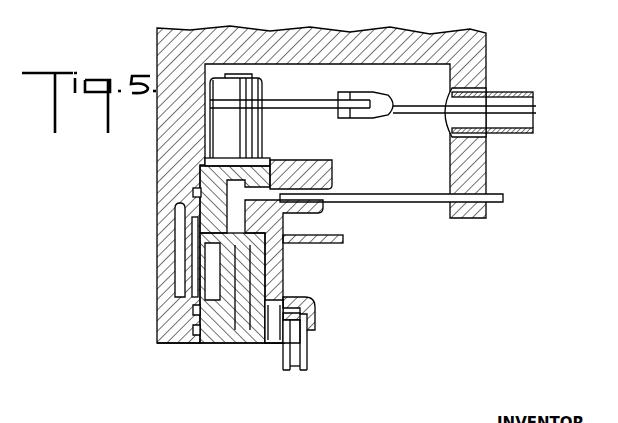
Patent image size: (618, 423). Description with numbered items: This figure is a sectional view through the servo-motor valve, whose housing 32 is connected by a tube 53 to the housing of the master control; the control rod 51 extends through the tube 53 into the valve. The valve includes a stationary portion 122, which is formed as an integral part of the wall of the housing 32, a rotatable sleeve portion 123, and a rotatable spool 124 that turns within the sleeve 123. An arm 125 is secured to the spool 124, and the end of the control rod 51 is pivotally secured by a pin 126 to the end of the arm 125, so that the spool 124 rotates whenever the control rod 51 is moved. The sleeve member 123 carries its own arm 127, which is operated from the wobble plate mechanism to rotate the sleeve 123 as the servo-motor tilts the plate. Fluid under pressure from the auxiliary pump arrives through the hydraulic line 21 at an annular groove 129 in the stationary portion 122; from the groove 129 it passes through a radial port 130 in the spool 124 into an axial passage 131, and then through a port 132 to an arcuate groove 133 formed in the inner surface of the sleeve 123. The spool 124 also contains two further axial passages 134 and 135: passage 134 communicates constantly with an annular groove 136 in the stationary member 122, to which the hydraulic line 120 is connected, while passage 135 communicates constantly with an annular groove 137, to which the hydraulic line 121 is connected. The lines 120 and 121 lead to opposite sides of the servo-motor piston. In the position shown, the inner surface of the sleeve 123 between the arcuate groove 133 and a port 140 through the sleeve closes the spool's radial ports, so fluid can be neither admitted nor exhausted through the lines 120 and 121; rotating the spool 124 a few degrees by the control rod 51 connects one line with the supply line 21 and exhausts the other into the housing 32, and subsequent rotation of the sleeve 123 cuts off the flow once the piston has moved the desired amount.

The hydraulic line 21 is at (418, 205).
The housing 32 is at (170, 140).
The control rod 51 is at (417, 104).
The tube 53 is at (517, 92).
The hydraulic line 120 is at (288, 378).
The hydraulic line 121 is at (302, 369).
The stationary portion 122 is at (172, 348).
The rotatable sleeve portion 123 is at (207, 284).
The rotatable spool 124 is at (246, 310).
The arm 125 is at (330, 88).
The pin 126 is at (352, 122).
The arm 127 is at (336, 231).
The annular groove 129 is at (333, 178).
The radial port 130 is at (258, 190).
The axial passage 131 is at (196, 194).
The port 132 is at (186, 243).
The arcuate groove 133 is at (197, 268).
The axial passage 134 is at (176, 318).
The axial passage 135 is at (248, 312).
The annular groove 136 is at (274, 341).
The annular groove 137 is at (293, 300).
The port 140 is at (286, 259).